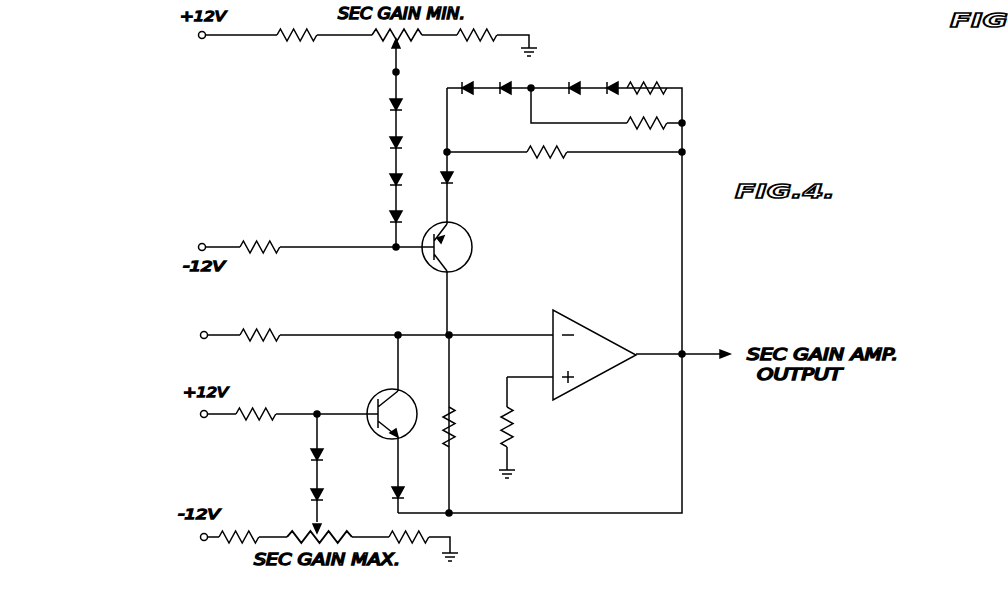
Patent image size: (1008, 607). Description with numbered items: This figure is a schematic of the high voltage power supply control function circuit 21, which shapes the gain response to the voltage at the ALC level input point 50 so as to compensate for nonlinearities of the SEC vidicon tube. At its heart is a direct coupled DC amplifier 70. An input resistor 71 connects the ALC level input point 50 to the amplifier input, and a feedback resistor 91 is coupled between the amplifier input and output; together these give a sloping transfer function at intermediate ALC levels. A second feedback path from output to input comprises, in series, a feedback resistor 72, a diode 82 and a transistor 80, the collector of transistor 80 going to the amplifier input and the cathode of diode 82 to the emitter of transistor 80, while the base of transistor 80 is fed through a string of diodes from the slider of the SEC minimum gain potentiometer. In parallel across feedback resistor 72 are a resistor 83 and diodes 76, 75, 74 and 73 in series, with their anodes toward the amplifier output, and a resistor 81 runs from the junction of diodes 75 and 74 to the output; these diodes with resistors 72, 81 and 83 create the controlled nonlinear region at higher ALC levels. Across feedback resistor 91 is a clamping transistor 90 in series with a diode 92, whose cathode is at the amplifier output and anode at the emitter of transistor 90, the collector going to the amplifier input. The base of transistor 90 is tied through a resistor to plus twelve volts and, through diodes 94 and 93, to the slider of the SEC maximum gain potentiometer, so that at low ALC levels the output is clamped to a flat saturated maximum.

The high voltage power supply control function circuit 21 is at (644, 500).
The ALC level input point 50 is at (205, 331).
The DC amplifier 70 is at (567, 392).
The input resistor 71 is at (260, 343).
The feedback resistor 72 is at (545, 160).
The diode 73 is at (467, 82).
The diode 74 is at (505, 94).
The diode 75 is at (578, 82).
The diode 76 is at (614, 82).
The transistor 80 is at (470, 243).
The resistor 81 is at (640, 130).
The diode 82 is at (453, 178).
The resistor 83 is at (647, 82).
The transistor 90 is at (398, 391).
The feedback resistor 91 is at (455, 425).
The diode 92 is at (404, 490).
The diode 93 is at (323, 491).
The diode 94 is at (310, 456).